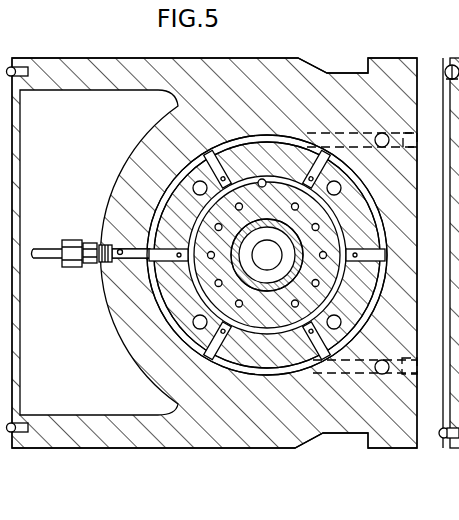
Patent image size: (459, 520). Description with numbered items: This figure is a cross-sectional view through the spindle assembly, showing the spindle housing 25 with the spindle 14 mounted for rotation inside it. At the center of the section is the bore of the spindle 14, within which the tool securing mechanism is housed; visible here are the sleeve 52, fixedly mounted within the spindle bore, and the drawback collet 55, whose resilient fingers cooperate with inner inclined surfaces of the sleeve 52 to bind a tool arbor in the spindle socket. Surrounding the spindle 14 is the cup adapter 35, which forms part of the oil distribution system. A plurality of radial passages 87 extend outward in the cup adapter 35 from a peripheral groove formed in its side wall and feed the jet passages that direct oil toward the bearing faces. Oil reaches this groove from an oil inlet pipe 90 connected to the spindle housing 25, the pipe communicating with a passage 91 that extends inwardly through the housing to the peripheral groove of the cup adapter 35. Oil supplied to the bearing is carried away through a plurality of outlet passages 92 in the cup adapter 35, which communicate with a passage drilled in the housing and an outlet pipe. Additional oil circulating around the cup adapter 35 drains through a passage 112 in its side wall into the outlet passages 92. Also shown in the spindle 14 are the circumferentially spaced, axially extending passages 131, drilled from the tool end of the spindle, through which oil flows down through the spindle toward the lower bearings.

The spindle housing 25 is at (257, 66).
The cup adapter 35 is at (177, 310).
The spindle 14 is at (267, 255).
The sleeve 52 is at (267, 255).
The drawback collet 55 is at (267, 270).
The radial passages 87 is at (267, 239).
The outlet passages 92 is at (266, 248).
The drain passage 112 is at (260, 166).
The axially extending passages 131 is at (288, 255).
The oil inlet pipe 90 is at (44, 247).
The passage 91 is at (108, 244).